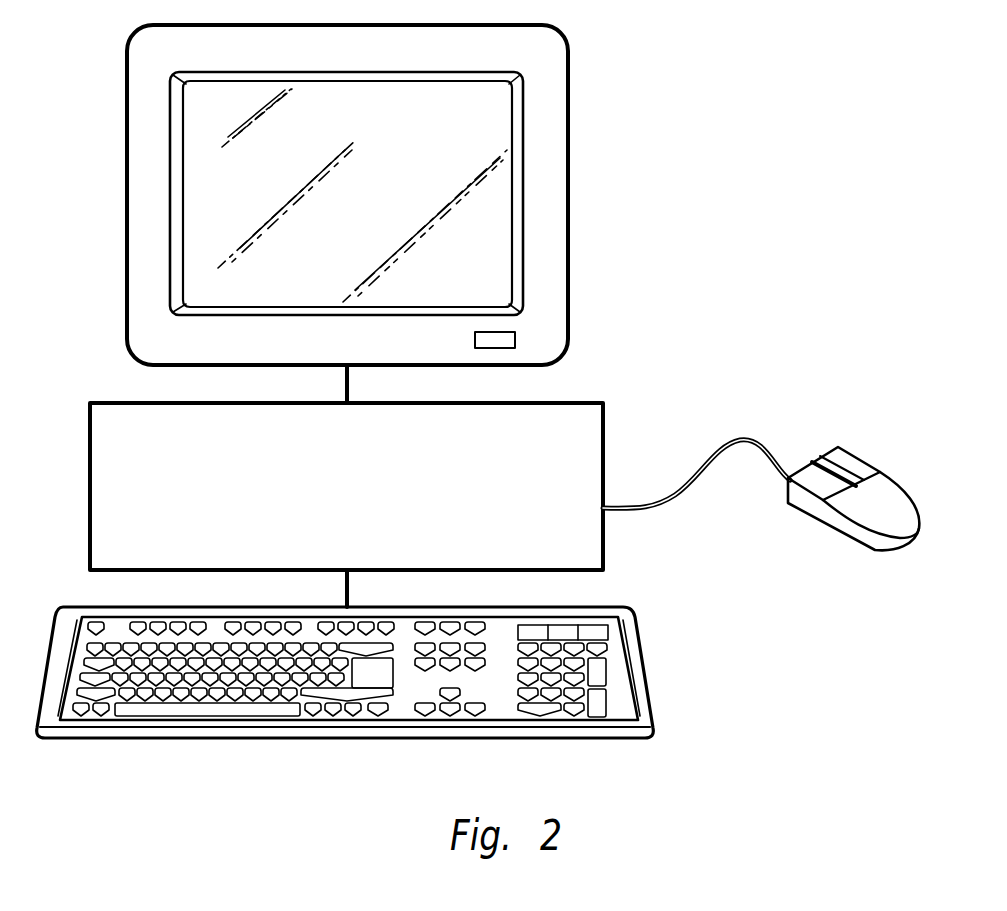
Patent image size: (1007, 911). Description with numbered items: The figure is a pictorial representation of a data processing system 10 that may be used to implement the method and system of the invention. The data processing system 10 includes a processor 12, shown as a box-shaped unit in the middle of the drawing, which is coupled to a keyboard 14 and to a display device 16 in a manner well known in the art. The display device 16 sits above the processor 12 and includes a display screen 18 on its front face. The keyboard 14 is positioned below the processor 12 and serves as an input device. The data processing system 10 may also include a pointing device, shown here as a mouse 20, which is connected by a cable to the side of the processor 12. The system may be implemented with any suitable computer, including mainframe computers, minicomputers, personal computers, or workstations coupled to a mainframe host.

The data processing system 10 is at (727, 336).
The processor 12 is at (603, 443).
The keyboard 14 is at (638, 652).
The display device 16 is at (568, 247).
The display screen 18 is at (510, 163).
The mouse 20 is at (822, 517).